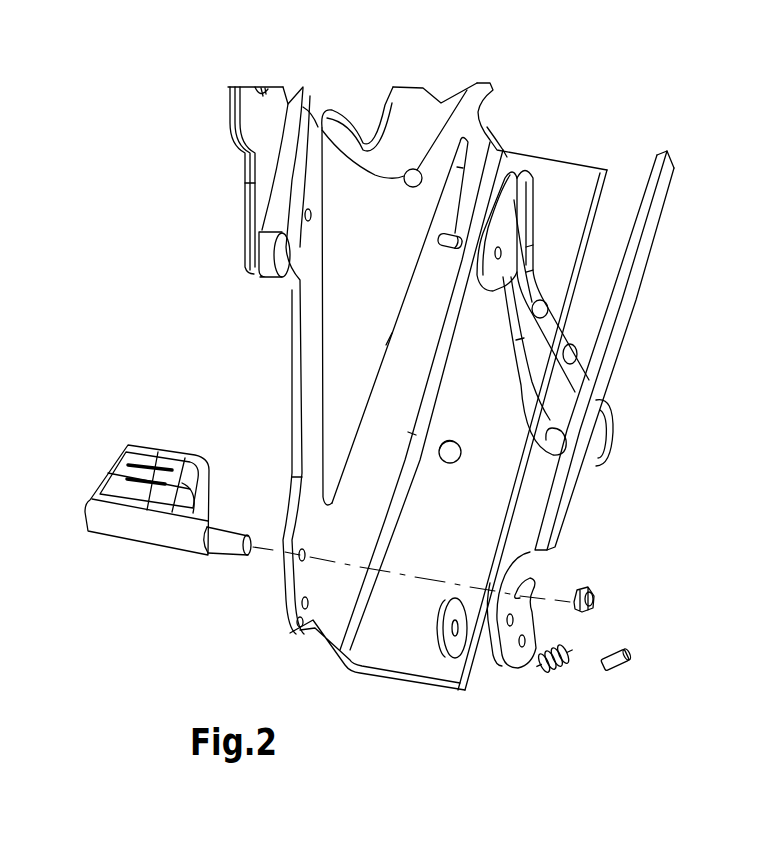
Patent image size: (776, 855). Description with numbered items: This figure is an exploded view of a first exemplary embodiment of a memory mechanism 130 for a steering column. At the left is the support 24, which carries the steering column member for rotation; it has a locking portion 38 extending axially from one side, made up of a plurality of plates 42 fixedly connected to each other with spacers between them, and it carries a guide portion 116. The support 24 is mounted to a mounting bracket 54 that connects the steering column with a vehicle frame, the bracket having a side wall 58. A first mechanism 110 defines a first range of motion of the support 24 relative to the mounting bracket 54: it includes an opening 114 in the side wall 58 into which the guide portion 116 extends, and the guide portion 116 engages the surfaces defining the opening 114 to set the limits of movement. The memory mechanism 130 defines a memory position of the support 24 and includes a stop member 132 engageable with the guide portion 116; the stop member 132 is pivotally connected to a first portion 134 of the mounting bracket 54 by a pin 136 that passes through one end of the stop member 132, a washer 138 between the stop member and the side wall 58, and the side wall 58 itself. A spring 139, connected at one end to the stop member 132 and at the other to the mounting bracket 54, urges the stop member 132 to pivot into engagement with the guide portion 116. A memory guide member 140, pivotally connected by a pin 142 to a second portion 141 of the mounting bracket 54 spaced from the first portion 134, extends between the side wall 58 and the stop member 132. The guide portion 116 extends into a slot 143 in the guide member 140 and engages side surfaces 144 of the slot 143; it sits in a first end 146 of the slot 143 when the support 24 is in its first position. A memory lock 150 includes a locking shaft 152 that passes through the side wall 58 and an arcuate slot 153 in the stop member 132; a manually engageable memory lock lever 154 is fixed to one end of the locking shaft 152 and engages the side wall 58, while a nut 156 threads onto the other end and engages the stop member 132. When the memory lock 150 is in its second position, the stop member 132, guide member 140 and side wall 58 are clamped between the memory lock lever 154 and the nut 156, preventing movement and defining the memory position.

The support 24 is at (224, 92).
The locking portion 38 is at (293, 103).
The plates 42 is at (252, 95).
The mounting bracket 54 is at (340, 612).
The side wall 58 is at (310, 393).
The first mechanism 110 is at (211, 318).
The opening 114 is at (410, 98).
The guide portion 116 is at (271, 260).
The memory mechanism 130 is at (494, 704).
The stop member 132 is at (657, 210).
The first portion 134 is at (292, 631).
The pin 136 is at (623, 658).
The washer 138 is at (437, 653).
The spring 139 is at (557, 672).
The memory guide member 140 is at (507, 217).
The second portion 141 is at (308, 185).
The pin 142 is at (472, 183).
The slot 143 is at (542, 306).
The side surfaces 144 is at (570, 350).
The first end 146 is at (505, 205).
The memory lock 150 is at (98, 460).
The locking shaft 152 is at (227, 545).
The arcuate slot 153 is at (533, 582).
The memory lock lever 154 is at (165, 460).
The nut 156 is at (592, 592).